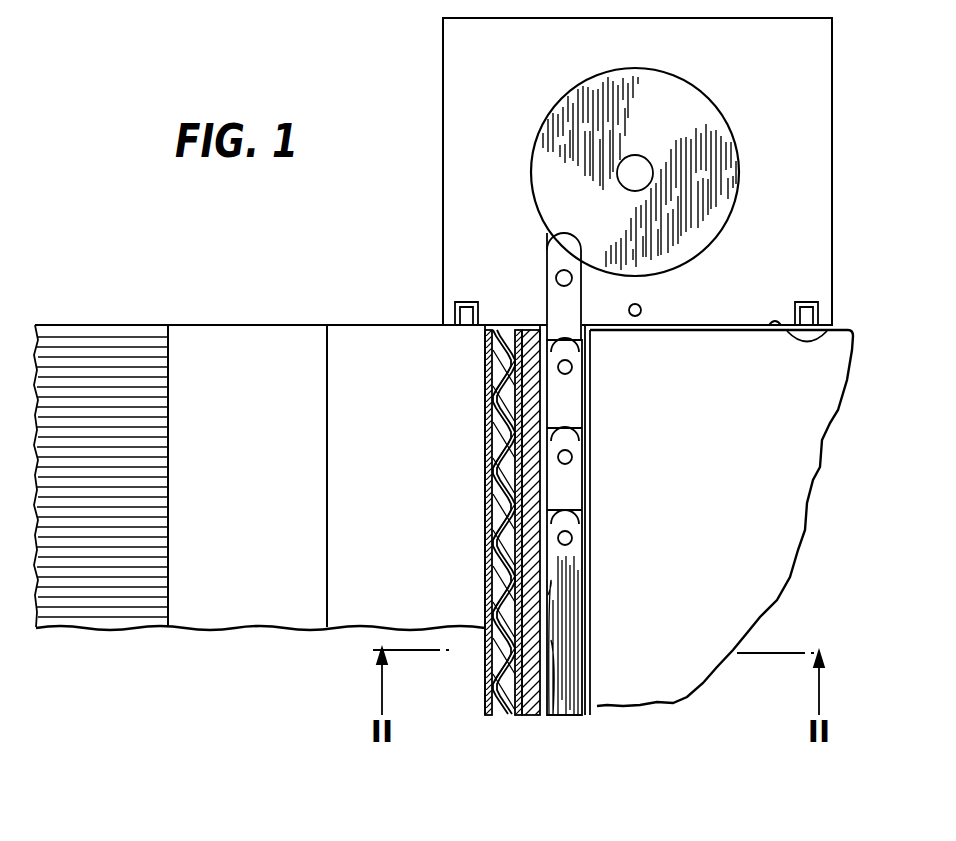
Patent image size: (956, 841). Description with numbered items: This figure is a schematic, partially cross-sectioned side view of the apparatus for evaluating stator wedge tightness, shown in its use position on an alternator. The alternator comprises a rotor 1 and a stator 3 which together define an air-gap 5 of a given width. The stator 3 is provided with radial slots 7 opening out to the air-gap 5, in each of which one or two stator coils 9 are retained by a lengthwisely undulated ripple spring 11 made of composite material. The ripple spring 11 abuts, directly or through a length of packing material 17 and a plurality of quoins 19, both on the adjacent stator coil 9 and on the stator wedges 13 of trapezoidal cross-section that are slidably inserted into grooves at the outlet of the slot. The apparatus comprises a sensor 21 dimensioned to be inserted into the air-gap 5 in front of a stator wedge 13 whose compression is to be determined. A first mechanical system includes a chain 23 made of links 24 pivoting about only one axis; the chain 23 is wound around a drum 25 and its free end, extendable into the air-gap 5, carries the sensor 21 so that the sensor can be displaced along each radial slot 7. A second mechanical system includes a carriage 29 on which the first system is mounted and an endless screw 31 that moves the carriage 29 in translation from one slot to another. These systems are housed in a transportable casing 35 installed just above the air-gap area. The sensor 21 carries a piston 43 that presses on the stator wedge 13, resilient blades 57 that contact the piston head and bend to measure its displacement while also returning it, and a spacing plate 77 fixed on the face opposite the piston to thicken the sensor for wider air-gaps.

The rotor 1 is at (808, 421).
The stator 3 is at (125, 338).
The air-gap 5 is at (546, 326).
The radial slot 7 is at (168, 335).
The stator coil 9 is at (338, 338).
The ripple spring 11 is at (505, 576).
The stator wedge 13 is at (505, 500).
The packing material 17 is at (500, 518).
The quoin 19 is at (490, 370).
The sensor 21 is at (572, 617).
The chain 23 is at (547, 265).
The link 24 is at (575, 365).
The drum 25 is at (737, 147).
The carriage 29 is at (830, 332).
The endless screw 31 is at (640, 306).
The casing 35 is at (832, 85).
The piston 43 is at (556, 716).
The resilient blade 57 is at (548, 598).
The spacing plate 77 is at (590, 700).